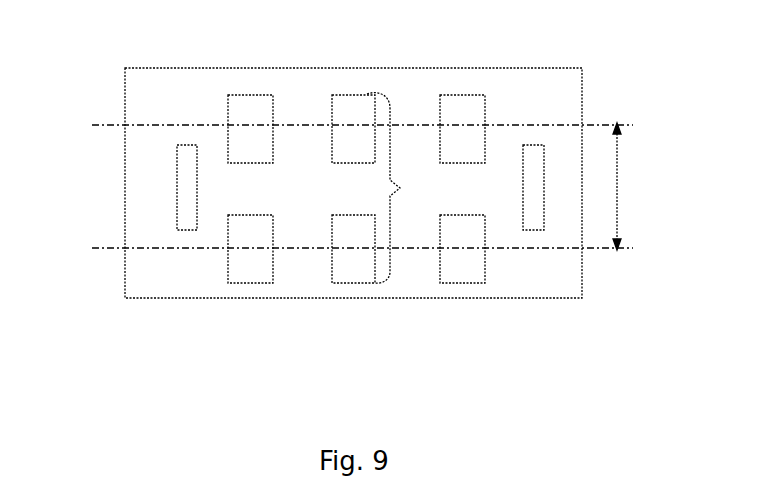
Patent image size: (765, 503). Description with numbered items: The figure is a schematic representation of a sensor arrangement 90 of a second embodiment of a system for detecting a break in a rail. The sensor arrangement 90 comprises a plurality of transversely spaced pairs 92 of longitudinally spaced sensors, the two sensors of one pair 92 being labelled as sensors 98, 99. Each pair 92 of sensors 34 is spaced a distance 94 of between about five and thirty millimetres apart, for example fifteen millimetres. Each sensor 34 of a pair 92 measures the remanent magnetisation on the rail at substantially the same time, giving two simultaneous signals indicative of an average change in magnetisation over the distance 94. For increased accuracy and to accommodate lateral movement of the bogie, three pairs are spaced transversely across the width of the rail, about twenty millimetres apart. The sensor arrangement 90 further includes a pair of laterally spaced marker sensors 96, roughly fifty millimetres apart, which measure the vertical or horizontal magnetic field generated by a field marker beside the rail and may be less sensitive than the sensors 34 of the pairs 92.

The sensor arrangement 90 is at (210, 327).
The pair of longitudinally spaced sensors 92 is at (399, 188).
The distance 94 is at (636, 186).
The marker sensor 96 is at (192, 183).
The sensor 98 is at (345, 94).
The sensor 99 is at (350, 284).
The sensor 34 is at (461, 282).